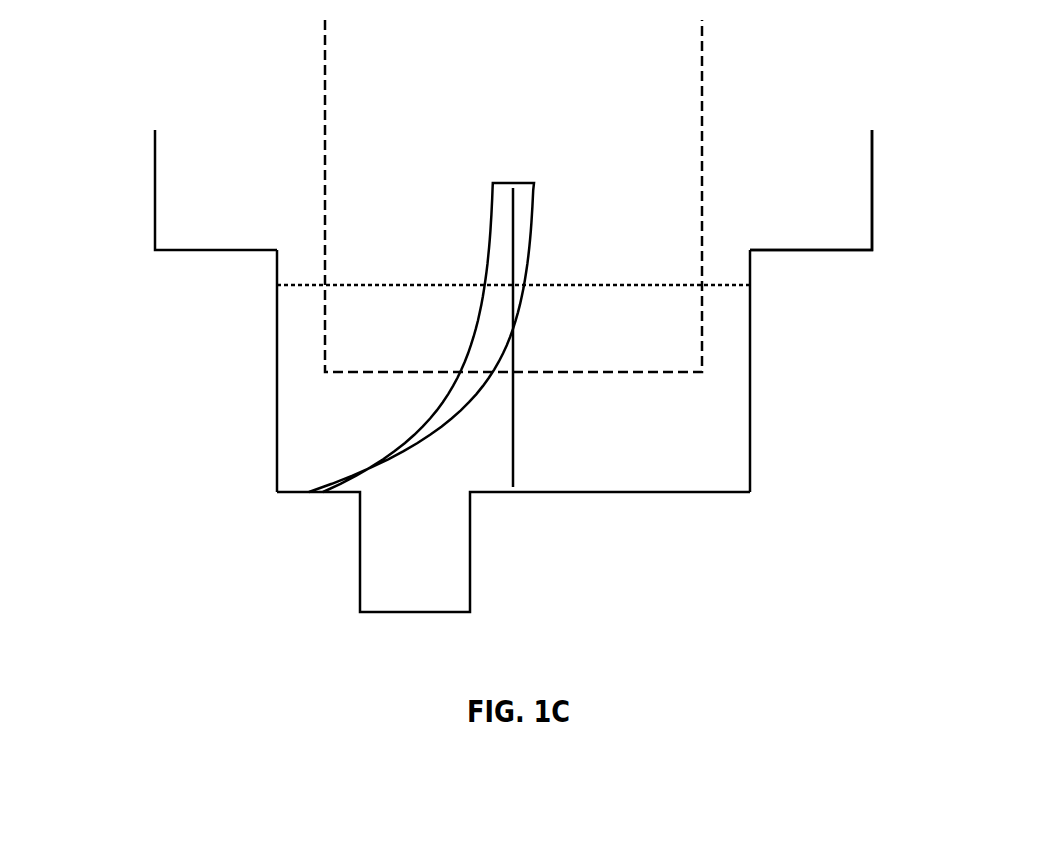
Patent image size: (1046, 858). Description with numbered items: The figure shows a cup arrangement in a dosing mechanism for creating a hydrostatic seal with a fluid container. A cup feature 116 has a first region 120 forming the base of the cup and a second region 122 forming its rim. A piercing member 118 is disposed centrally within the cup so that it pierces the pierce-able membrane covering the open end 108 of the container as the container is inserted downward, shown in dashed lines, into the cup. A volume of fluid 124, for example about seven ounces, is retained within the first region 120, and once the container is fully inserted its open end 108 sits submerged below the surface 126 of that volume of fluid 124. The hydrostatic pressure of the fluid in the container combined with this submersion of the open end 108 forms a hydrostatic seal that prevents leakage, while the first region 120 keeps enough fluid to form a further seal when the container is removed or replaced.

The open end 108 is at (323, 116).
The cup feature 116 is at (130, 247).
The piercing member 118 is at (528, 272).
The first region 120 is at (277, 435).
The second region 122 is at (872, 231).
The volume of fluid 124 is at (705, 437).
The surface 126 is at (718, 295).